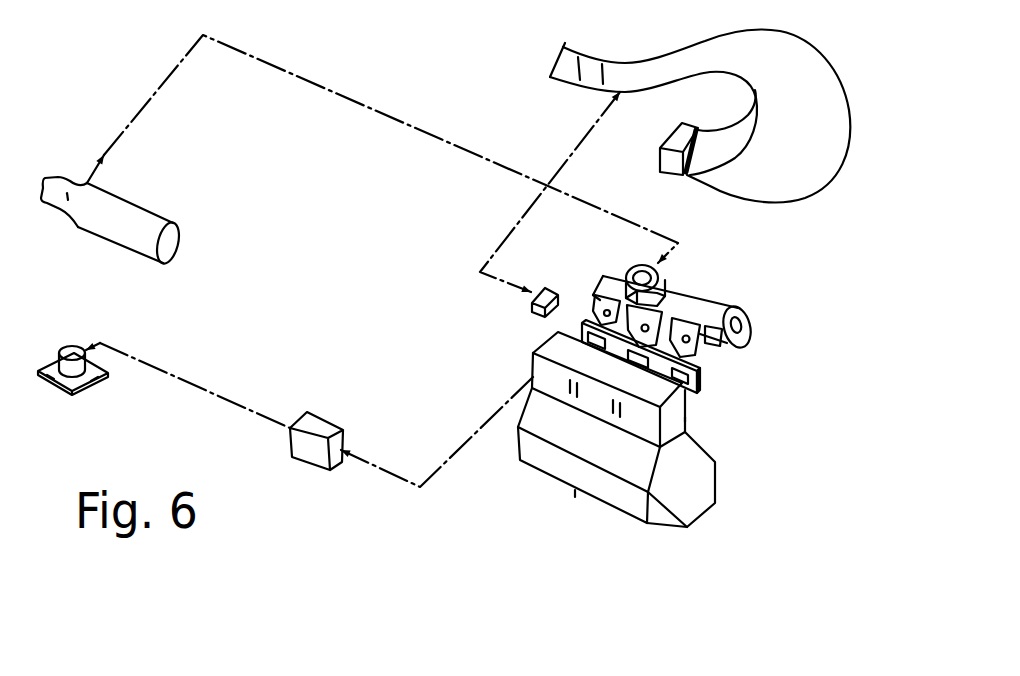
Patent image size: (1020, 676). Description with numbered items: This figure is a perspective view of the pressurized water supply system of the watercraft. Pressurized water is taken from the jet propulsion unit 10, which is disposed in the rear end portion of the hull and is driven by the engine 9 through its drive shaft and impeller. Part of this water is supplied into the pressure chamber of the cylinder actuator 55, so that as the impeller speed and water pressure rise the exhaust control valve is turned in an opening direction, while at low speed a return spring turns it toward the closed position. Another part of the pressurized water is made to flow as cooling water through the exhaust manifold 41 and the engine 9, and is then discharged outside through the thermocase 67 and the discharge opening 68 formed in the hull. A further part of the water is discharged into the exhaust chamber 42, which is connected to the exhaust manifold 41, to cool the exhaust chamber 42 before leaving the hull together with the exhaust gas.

The jet propulsion unit 10 is at (158, 207).
The exhaust chamber 42 is at (835, 82).
The exhaust manifold 41 is at (722, 297).
The engine 9 is at (700, 447).
The cylinder actuator 55 is at (532, 310).
The thermocase 67 is at (327, 420).
The discharge opening 68 is at (75, 348).